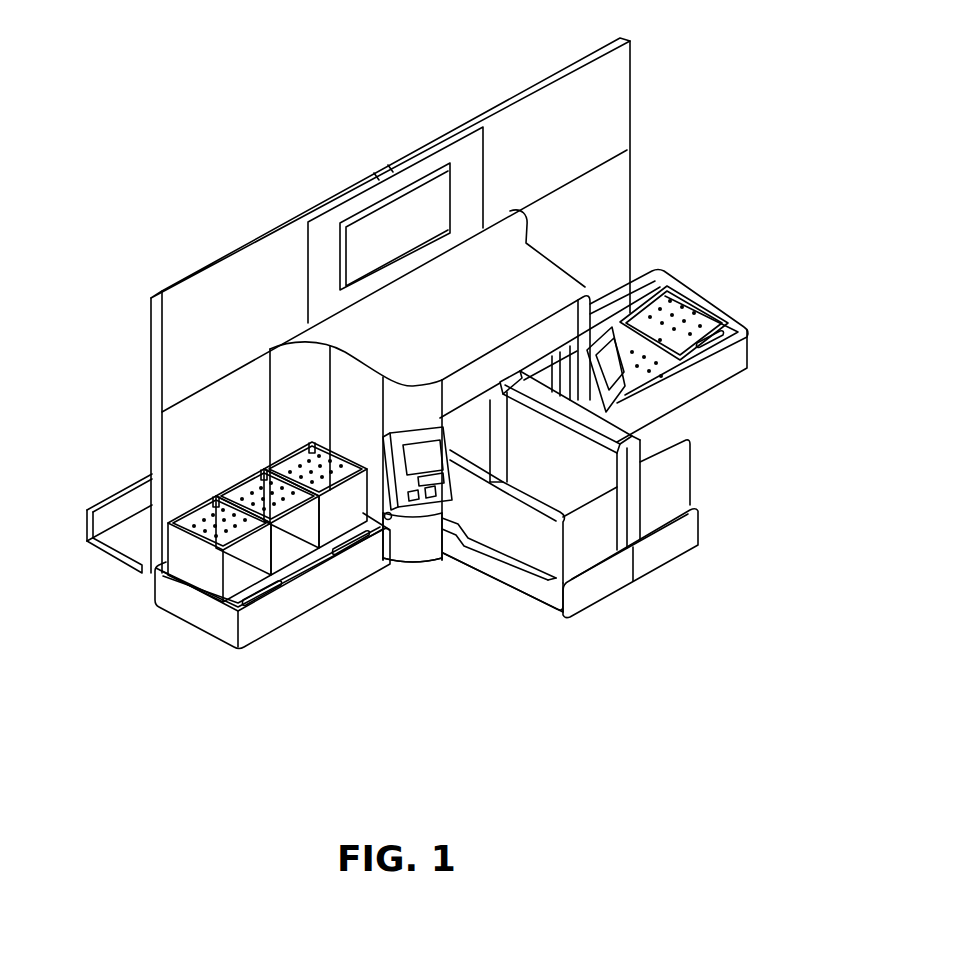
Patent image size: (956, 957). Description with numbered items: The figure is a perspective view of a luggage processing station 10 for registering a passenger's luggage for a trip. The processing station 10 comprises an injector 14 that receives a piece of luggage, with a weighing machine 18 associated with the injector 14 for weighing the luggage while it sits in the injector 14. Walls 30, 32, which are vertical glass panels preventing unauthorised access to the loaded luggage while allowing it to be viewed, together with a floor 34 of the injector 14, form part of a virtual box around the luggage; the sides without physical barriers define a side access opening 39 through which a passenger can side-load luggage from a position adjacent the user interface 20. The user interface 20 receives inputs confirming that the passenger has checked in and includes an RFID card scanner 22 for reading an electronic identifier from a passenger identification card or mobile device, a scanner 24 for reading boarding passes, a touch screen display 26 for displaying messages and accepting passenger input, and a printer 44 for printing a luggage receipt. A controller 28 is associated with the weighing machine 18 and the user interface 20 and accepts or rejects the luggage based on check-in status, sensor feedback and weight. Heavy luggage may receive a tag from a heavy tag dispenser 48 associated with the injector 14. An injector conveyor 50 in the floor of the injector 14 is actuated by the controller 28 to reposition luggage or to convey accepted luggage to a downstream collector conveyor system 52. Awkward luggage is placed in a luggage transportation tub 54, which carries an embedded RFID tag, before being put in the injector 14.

The processing station 10 is at (733, 427).
The injector 14 is at (504, 617).
The side access opening 39 is at (520, 560).
The weighing machine 18 is at (543, 597).
The user interface 20 is at (264, 480).
The controller 28 is at (264, 480).
The RFID card scanner 22 is at (434, 541).
The scanner 24 is at (434, 541).
The touch screen display 26 is at (417, 437).
The wall 30 is at (560, 474).
The wall 32 is at (582, 548).
The floor 34 is at (512, 537).
The printer 44 is at (412, 512).
The heavy tag dispenser 48 is at (420, 512).
The injector conveyor 50 is at (515, 545).
The collector conveyor system 52 is at (130, 513).
The luggage transportation tub 54 is at (205, 582).